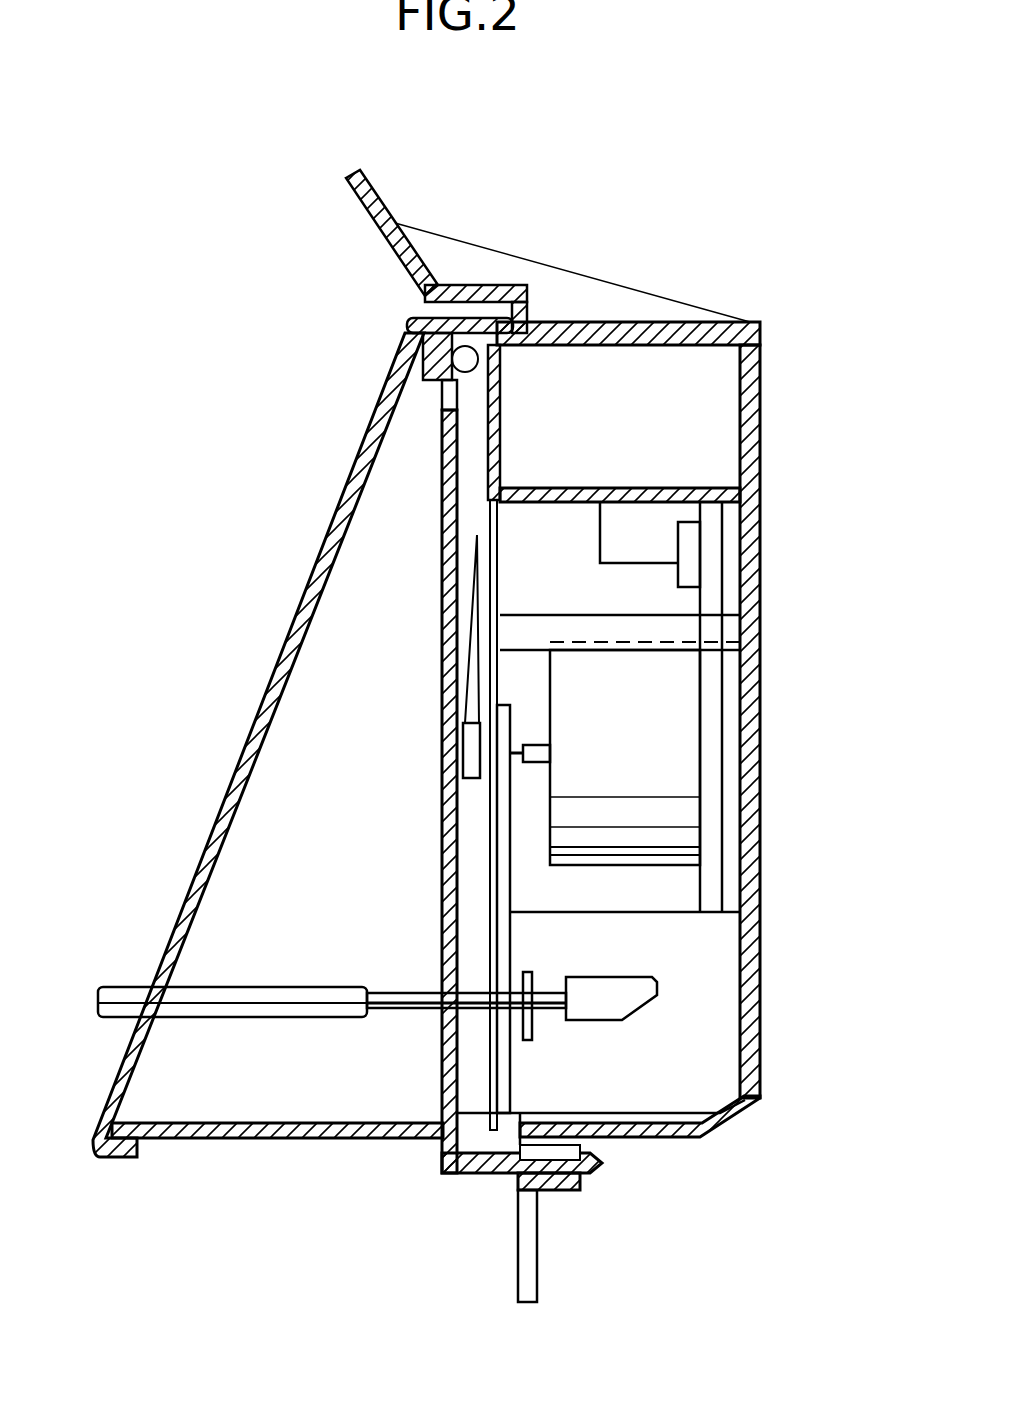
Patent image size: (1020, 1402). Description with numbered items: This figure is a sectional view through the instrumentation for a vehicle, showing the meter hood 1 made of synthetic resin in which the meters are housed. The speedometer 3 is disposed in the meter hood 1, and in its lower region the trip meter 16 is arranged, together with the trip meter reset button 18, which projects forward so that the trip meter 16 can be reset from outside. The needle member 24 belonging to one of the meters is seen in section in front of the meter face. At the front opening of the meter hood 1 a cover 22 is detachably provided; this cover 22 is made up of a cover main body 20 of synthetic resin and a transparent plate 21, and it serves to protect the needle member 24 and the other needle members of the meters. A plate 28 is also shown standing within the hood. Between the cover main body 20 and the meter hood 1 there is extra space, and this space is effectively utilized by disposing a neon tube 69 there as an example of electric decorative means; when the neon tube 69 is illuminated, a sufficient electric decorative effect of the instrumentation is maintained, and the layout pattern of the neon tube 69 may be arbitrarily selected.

The meter hood 1 is at (763, 1000).
The speedometer 3 is at (784, 755).
The trip meter 16 is at (714, 950).
The trip meter reset button 18 is at (252, 987).
The cover main body 20 is at (277, 1182).
The transparent plate 21 is at (103, 1157).
The cover 22 is at (255, 819).
The needle member 24 is at (470, 647).
The plate 28 is at (487, 877).
The neon tube 69 is at (479, 361).